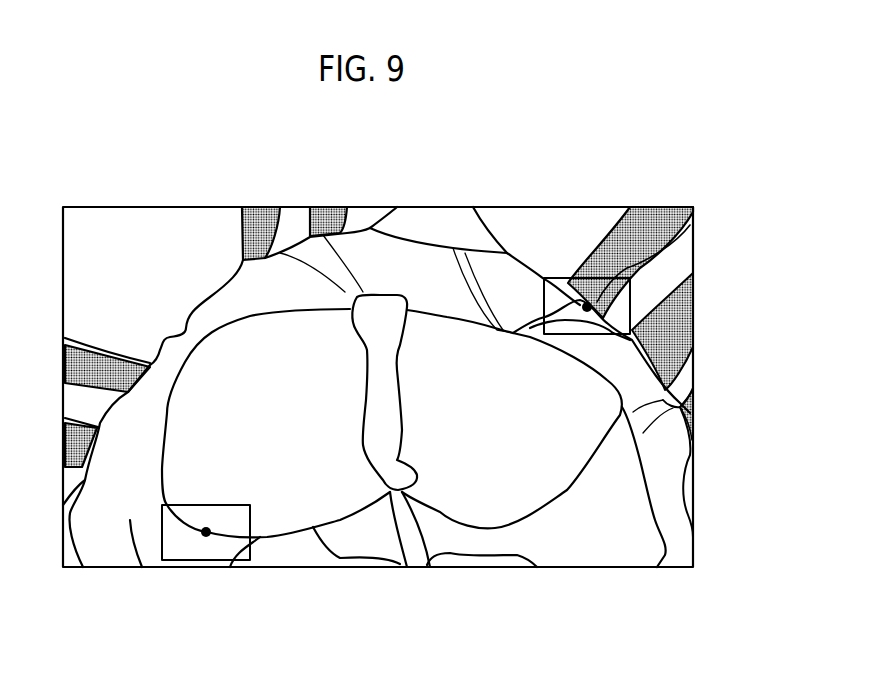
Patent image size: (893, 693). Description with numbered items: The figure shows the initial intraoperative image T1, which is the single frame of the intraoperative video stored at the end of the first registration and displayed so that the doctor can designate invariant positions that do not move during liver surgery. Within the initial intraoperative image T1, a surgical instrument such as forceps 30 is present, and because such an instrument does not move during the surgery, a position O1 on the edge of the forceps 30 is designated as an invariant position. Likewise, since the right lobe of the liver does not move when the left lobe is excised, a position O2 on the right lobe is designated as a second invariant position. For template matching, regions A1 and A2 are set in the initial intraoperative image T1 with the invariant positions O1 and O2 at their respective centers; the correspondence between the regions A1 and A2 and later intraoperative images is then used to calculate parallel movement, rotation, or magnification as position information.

The initial intraoperative image T1 is at (420, 207).
The region A1 is at (564, 278).
The forceps 30 is at (647, 218).
The invariant position on the edge of the forceps O1 is at (589, 303).
The region A2 is at (162, 523).
The invariant position of the right lobe of the liver O2 is at (205, 536).